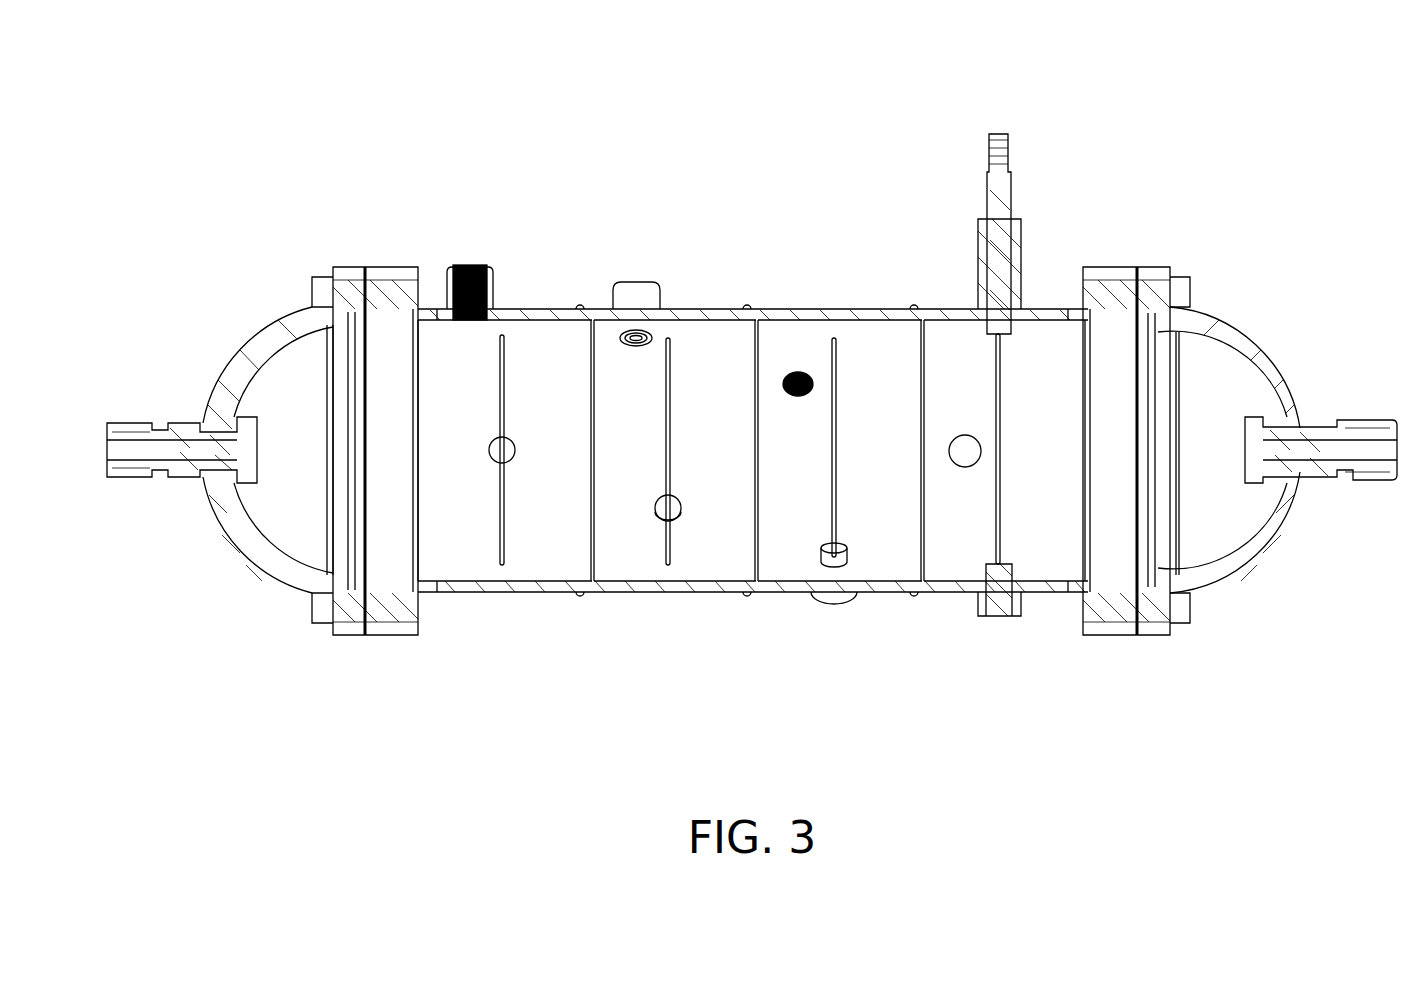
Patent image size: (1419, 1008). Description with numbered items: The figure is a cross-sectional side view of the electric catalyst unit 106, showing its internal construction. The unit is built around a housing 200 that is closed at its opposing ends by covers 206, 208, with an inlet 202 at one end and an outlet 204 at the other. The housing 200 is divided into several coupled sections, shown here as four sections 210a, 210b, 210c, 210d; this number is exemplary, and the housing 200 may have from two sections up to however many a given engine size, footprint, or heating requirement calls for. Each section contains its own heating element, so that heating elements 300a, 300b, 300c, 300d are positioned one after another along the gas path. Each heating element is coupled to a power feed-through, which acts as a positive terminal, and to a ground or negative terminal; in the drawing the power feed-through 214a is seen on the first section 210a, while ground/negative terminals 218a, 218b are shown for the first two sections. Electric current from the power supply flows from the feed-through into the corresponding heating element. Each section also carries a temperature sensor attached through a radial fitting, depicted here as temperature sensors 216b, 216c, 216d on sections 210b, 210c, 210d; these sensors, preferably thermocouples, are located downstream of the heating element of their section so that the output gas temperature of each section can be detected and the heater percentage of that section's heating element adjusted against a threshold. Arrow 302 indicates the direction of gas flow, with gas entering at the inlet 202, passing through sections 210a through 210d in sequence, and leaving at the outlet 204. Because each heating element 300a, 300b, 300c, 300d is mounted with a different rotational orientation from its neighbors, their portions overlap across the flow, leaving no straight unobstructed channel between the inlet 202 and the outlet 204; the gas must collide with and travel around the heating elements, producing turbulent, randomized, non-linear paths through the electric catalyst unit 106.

The electric catalyst unit 106 is at (268, 155).
The housing 200 is at (1137, 660).
The inlet 202 is at (1348, 433).
The outlet 204 is at (140, 432).
The cover 206 is at (1252, 553).
The cover 208 is at (257, 557).
The section 210a is at (954, 585).
The section 210b is at (887, 585).
The section 210c is at (694, 585).
The section 210d is at (506, 585).
The power feed-through 214a is at (1004, 193).
The temperature sensor 216b is at (798, 398).
The temperature sensor 216c is at (638, 290).
The temperature sensor 216d is at (488, 267).
The ground/negative terminal 218a is at (1016, 609).
The ground/negative terminal 218b is at (829, 597).
The heating element 300a is at (1039, 312).
The heating element 300b is at (836, 340).
The heating element 300c is at (668, 338).
The heating element 300d is at (502, 340).
The arrow 302 is at (1278, 283).